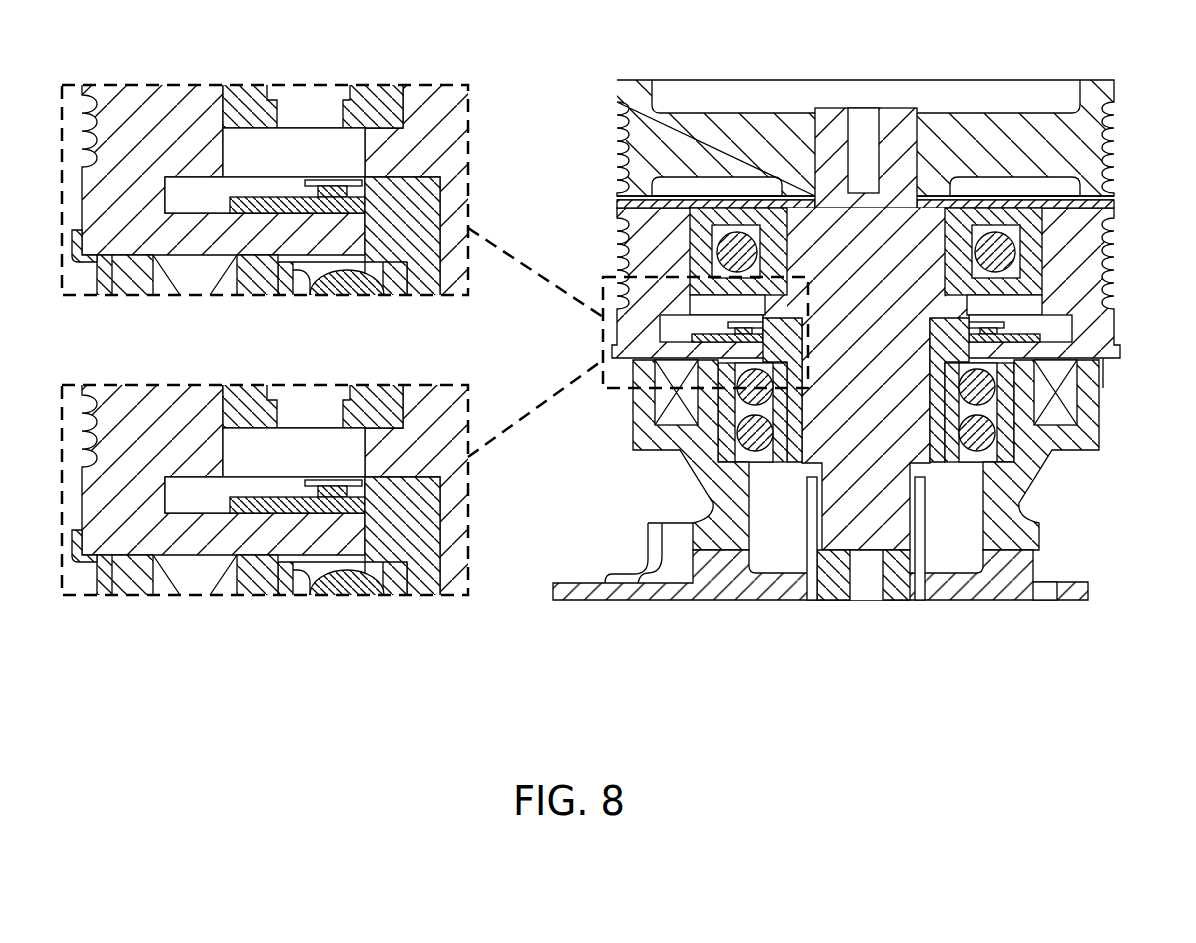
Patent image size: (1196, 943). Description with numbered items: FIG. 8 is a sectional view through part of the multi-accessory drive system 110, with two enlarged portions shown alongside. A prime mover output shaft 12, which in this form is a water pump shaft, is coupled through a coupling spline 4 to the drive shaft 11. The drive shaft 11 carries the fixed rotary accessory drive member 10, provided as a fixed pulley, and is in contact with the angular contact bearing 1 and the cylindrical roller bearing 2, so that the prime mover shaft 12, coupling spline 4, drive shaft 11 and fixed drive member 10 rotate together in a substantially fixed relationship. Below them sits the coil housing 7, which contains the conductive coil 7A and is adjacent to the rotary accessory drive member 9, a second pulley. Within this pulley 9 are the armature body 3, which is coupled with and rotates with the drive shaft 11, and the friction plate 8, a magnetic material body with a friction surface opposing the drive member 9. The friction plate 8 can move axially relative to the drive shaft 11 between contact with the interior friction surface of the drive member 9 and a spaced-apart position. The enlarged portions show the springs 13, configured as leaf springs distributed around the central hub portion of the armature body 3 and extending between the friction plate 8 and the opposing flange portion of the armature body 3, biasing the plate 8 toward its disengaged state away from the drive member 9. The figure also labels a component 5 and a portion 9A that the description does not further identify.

The angular contact bearing 1 is at (975, 458).
The cylindrical roller bearing 2 is at (737, 226).
The armature body 3 is at (424, 212).
The coupling spline 4 is at (813, 604).
The retaining clip 5 is at (1110, 360).
The coil housing 7 is at (692, 447).
The conductive coil 7A is at (1055, 406).
The friction plate 8 is at (230, 204).
The rotary accessory drive member 9 is at (1116, 270).
The groove 9A is at (248, 219).
The fixed rotary accessory drive member 10 is at (1116, 133).
The drive shaft 11 is at (899, 105).
The prime mover output shaft 12 is at (890, 606).
The springs 13 is at (318, 190).
The multi-accessory drive system 110 is at (1018, 650).